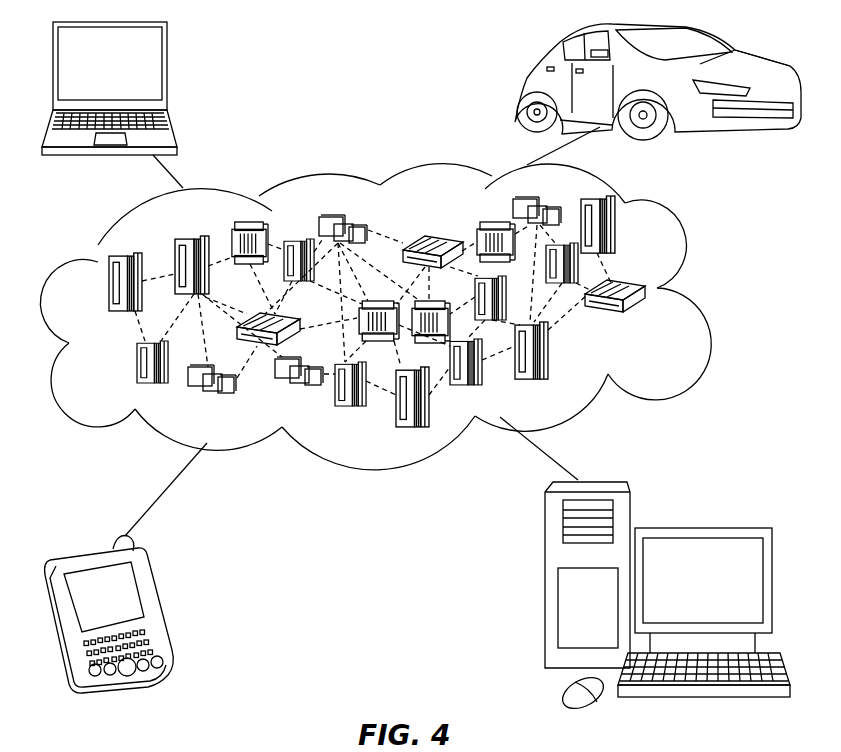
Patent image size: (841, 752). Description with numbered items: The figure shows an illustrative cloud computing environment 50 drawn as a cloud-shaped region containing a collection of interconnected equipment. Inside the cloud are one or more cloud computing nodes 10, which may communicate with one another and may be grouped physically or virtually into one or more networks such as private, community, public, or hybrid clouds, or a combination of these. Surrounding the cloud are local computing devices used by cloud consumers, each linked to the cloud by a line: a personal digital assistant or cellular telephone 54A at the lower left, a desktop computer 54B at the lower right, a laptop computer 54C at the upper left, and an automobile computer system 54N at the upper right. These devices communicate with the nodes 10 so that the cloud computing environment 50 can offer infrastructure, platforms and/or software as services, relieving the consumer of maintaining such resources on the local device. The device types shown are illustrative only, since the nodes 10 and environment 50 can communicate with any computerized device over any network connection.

The cloud computing nodes 10 is at (421, 311).
The cloud computing environment 50 is at (703, 300).
The personal digital assistant (PDA) or cellular telephone 54A is at (152, 603).
The desktop computer 54B is at (700, 528).
The laptop computer 54C is at (167, 67).
The automobile computer system 54N is at (521, 83).